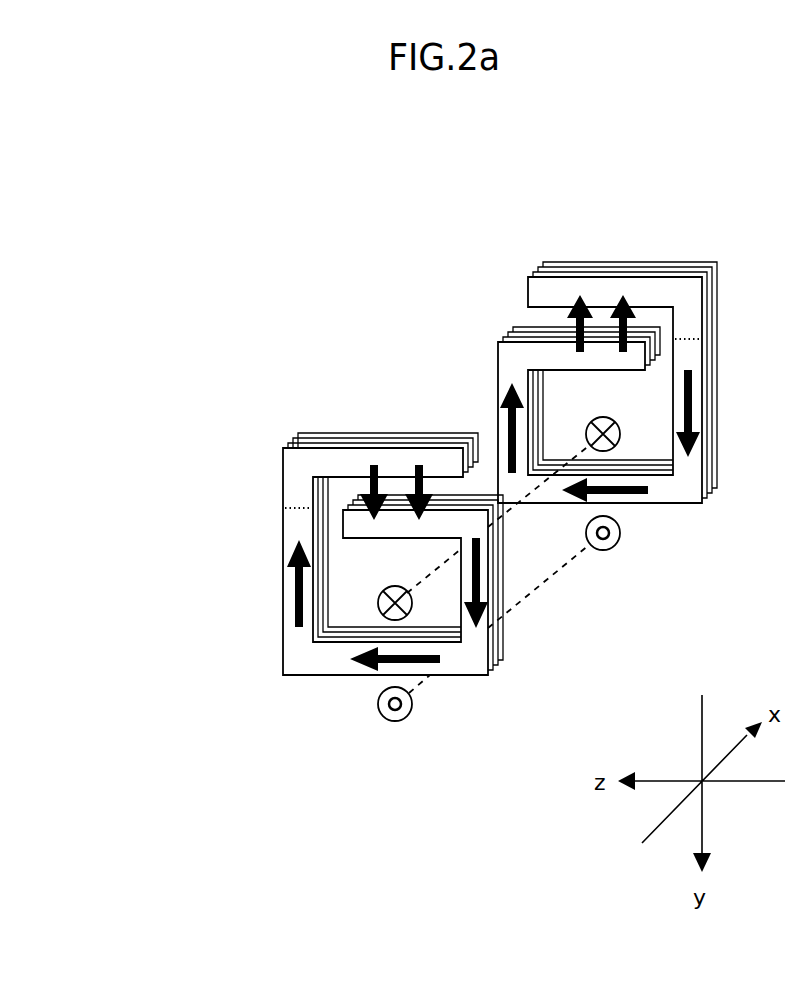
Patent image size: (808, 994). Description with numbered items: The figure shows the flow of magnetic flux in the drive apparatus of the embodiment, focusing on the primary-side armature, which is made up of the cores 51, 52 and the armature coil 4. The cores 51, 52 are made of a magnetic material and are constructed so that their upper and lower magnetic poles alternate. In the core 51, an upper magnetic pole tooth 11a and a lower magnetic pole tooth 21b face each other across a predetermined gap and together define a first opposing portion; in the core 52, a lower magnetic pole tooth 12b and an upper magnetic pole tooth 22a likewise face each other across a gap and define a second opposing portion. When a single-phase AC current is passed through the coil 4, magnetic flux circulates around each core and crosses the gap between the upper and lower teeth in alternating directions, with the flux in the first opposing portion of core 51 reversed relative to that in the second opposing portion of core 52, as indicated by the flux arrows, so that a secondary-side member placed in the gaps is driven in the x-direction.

The upper magnetic pole tooth 11a is at (315, 462).
The lower magnetic pole tooth 12b is at (523, 355).
The lower magnetic pole tooth 21b is at (358, 528).
The upper magnetic pole tooth 22a is at (593, 290).
The armature coil 4 is at (352, 645).
The core 51 is at (321, 542).
The core 52 is at (555, 389).